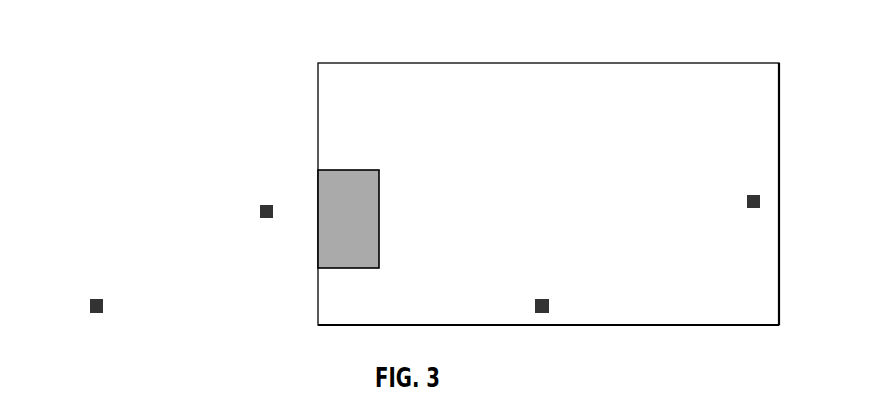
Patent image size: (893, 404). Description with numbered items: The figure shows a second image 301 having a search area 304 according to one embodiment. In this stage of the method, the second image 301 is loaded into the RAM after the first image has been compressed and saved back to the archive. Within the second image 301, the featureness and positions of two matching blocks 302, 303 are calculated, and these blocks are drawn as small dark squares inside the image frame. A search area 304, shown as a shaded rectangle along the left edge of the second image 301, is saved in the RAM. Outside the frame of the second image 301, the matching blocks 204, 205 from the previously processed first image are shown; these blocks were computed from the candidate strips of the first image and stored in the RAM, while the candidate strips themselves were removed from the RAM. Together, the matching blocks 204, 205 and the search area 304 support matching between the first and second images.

The second image 301 is at (334, 94).
The matching block 302 is at (582, 296).
The matching block 303 is at (722, 178).
The search area 304 is at (388, 190).
The matching block 204 is at (234, 194).
The matching block 205 is at (73, 273).